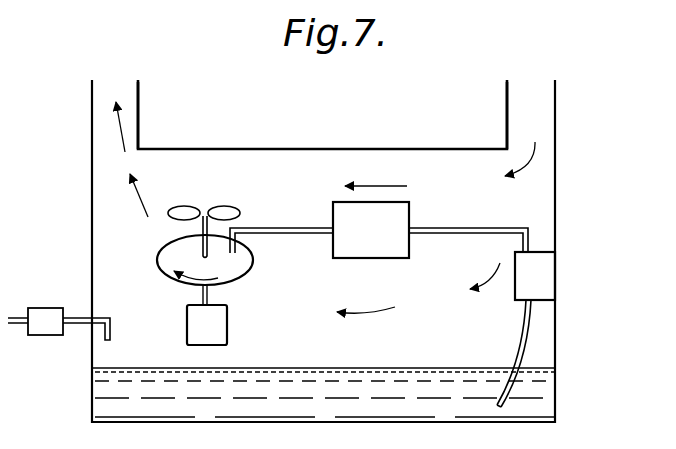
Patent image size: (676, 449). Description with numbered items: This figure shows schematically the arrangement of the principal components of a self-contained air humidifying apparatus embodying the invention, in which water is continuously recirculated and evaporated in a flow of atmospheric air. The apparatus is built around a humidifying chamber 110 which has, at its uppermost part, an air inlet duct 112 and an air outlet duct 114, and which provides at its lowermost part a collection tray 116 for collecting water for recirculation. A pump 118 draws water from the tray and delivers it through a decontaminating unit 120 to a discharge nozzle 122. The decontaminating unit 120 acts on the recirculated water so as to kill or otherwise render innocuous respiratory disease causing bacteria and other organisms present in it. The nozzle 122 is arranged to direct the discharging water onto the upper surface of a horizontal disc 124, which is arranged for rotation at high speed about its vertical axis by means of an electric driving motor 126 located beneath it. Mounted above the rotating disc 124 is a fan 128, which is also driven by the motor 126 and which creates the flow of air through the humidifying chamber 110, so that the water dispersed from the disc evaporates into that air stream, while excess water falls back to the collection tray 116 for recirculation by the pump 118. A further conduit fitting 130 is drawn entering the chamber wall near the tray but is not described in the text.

The humidifying chamber 110 is at (312, 149).
The air inlet duct 112 is at (507, 95).
The air outlet duct 114 is at (138, 110).
The collection tray 116 is at (101, 392).
The pump 118 is at (540, 283).
The decontaminating unit 120 is at (390, 258).
The discharge nozzle 122 is at (253, 248).
The horizontal disc 124 is at (247, 280).
The electric driving motor 126 is at (227, 333).
The fan 128 is at (226, 209).
The inlet conduit with fitting 130 is at (66, 306).